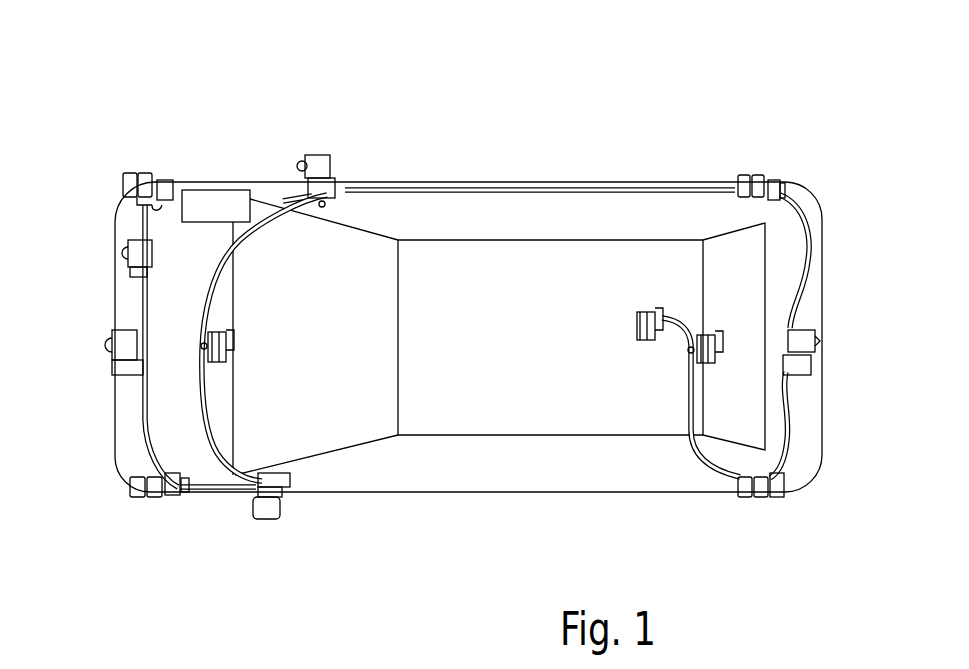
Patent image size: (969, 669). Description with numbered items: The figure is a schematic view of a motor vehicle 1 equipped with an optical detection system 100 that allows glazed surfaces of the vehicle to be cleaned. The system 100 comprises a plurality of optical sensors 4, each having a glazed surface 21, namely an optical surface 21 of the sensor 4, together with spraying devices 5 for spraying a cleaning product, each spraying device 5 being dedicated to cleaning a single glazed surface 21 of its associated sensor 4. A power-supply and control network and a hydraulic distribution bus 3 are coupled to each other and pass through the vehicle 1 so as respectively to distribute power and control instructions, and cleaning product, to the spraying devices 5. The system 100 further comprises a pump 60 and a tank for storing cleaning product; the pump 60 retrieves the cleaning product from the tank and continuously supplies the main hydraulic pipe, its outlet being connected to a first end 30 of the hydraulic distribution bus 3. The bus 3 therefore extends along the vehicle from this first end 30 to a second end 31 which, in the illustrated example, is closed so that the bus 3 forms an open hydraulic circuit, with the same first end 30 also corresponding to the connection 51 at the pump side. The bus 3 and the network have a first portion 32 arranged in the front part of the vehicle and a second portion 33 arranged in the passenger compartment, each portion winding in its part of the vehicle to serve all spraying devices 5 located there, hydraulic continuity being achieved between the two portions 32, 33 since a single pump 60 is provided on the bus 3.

The motor vehicle 1 is at (125, 62).
The optical detection system 100 is at (110, 180).
The hydraulic distribution bus 3 is at (482, 190).
The optical sensor 4 is at (322, 156).
The spraying device 5 is at (335, 186).
The glazed surface 21 is at (300, 162).
The first end 30 is at (92, 215).
The power distribution unit 51 is at (125, 207).
The second end 31 is at (663, 318).
The first portion 32 is at (128, 440).
The second portion 33 is at (573, 176).
The pump 60 is at (196, 190).